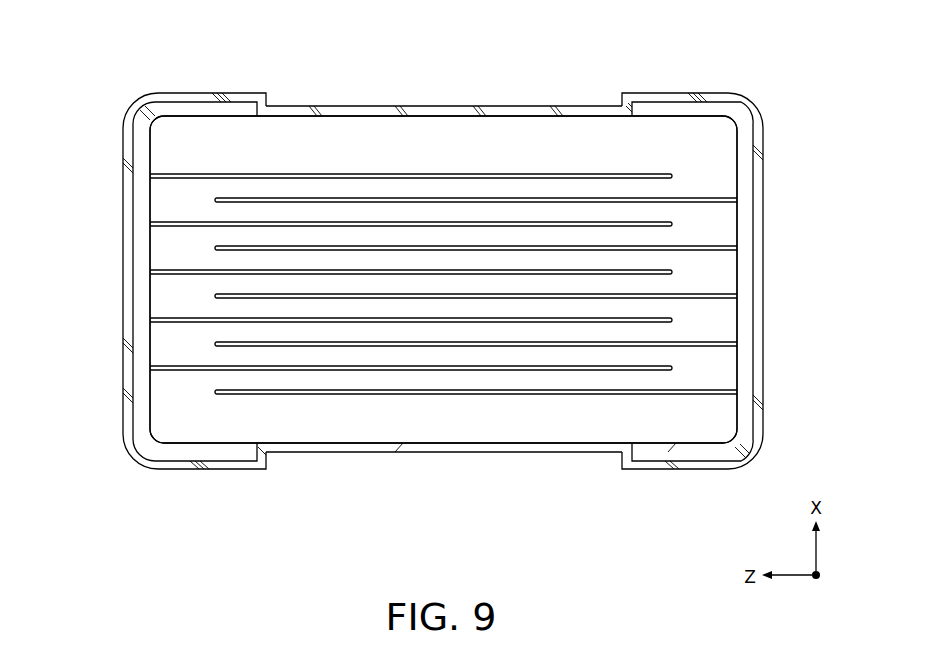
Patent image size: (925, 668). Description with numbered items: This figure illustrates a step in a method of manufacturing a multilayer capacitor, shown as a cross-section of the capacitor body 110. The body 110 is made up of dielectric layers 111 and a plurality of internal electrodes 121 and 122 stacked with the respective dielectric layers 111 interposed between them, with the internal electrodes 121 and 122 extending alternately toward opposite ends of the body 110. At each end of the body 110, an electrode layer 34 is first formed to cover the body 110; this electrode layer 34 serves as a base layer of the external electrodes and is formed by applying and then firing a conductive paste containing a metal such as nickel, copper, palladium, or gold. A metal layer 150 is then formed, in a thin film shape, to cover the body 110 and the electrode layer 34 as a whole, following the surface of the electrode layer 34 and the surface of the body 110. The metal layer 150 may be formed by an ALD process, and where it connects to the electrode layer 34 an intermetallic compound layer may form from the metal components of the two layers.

The electrode layer 34 is at (143, 258).
The body 110 is at (377, 110).
The dielectric layer 111 is at (490, 190).
The internal electrode 121 is at (537, 174).
The internal electrode 122 is at (600, 198).
The metal layer 150 is at (311, 106).